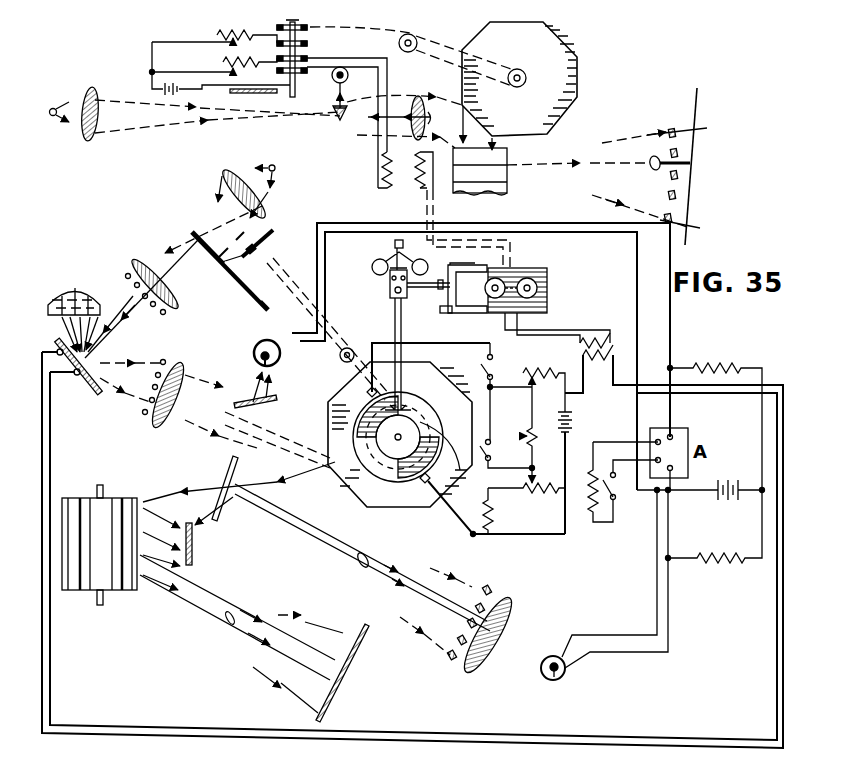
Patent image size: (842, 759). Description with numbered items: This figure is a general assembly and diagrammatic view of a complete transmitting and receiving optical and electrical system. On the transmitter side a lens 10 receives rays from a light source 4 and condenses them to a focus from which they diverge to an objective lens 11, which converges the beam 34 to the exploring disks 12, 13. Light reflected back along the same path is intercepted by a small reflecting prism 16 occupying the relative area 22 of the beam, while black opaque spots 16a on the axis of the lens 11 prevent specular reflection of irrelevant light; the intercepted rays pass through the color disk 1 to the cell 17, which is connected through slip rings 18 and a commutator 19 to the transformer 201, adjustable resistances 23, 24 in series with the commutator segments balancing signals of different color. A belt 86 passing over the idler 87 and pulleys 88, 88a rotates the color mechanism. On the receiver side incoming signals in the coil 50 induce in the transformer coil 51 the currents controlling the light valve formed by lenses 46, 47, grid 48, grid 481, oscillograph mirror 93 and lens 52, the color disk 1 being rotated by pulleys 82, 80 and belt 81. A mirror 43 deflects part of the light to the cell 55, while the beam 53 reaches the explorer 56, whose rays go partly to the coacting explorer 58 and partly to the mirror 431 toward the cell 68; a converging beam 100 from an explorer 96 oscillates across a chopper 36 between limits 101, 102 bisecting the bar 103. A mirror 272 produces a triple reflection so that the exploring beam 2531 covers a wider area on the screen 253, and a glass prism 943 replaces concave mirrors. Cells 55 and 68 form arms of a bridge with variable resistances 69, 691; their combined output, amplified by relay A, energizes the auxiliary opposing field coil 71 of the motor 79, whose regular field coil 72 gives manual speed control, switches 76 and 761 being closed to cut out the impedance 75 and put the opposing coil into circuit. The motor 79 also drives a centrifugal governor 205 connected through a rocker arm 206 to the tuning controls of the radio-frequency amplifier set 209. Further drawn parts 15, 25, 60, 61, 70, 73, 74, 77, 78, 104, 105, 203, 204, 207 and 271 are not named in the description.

The color disk 1 is at (238, 291).
The light source 4 is at (55, 107).
The lens 10 is at (93, 96).
The objective lens 11 is at (419, 98).
The exploring disk 12 is at (519, 79).
The exploring disk 13 is at (507, 180).
The scale line 15 is at (697, 118).
The reflecting prism 16 is at (335, 121).
The black opaque spots 16a is at (431, 119).
The cell 17 is at (348, 77).
The slip rings 18 is at (308, 44).
The commutator 19 is at (277, 58).
The prism area 22 is at (308, 70).
The adjustable resistance 23 is at (214, 30).
The adjustable resistance 24 is at (214, 59).
The battery 25 is at (221, 68).
The light beam 34 is at (650, 168).
The chopper 36 is at (670, 153).
The mirror 43 is at (278, 399).
The lens 46 is at (222, 173).
The lens 47 is at (151, 263).
The grid 48 is at (164, 316).
The transformer coil 50 is at (598, 363).
The transformer coil 51 is at (606, 337).
The lens 52 is at (185, 367).
The beam 53 is at (290, 434).
The cell 55 is at (264, 340).
The explorer 56 is at (422, 504).
The coacting explorer 58 is at (118, 512).
The light ray 60 is at (306, 700).
The light ray 61 is at (344, 632).
The cell 68 is at (553, 682).
The variable resistance 69 is at (714, 526).
The battery 70 is at (728, 482).
The auxiliary opposing field coil 71 is at (600, 482).
The regular field coil 72 is at (498, 511).
The variable resistor 73 is at (526, 491).
The battery 74 is at (572, 413).
The impedance 75 is at (537, 429).
The switch 76 is at (506, 427).
The variable resistor 77 is at (527, 378).
The switch 78 is at (497, 366).
The motor 79 is at (402, 479).
The pulley 80 is at (380, 456).
The belt 81 is at (347, 346).
The pulley 82 is at (254, 246).
The belt 86 is at (444, 52).
The idler 87 is at (415, 52).
The pulley 88 is at (523, 86).
The pulley 88a is at (360, 38).
The oscillograph mirror 93 is at (100, 395).
The explorer 96 is at (274, 174).
The converging beam 100 is at (358, 566).
The oscillation limit 101 is at (452, 576).
The oscillation limit 102 is at (418, 630).
The chopper bar 103 is at (673, 128).
The lens 104 is at (514, 610).
The light rays 105 is at (545, 646).
The transformer 201 is at (401, 179).
The resistance bar 203 is at (252, 93).
The spring arm 204 is at (445, 462).
The centrifugal governor 205 is at (392, 259).
The rocker arm 206 is at (424, 289).
The clamp 207 is at (466, 311).
The radio-frequency amplifier set 209 is at (548, 291).
The screen 253 is at (346, 672).
The light ray 271 is at (186, 492).
The mirror 272 is at (193, 550).
The mirror 431 is at (222, 511).
The grid 481 is at (145, 416).
The variable resistance 691 is at (715, 418).
The switch 761 is at (625, 479).
The glass prism 943 is at (88, 296).
The exploring beam 2531 is at (234, 616).